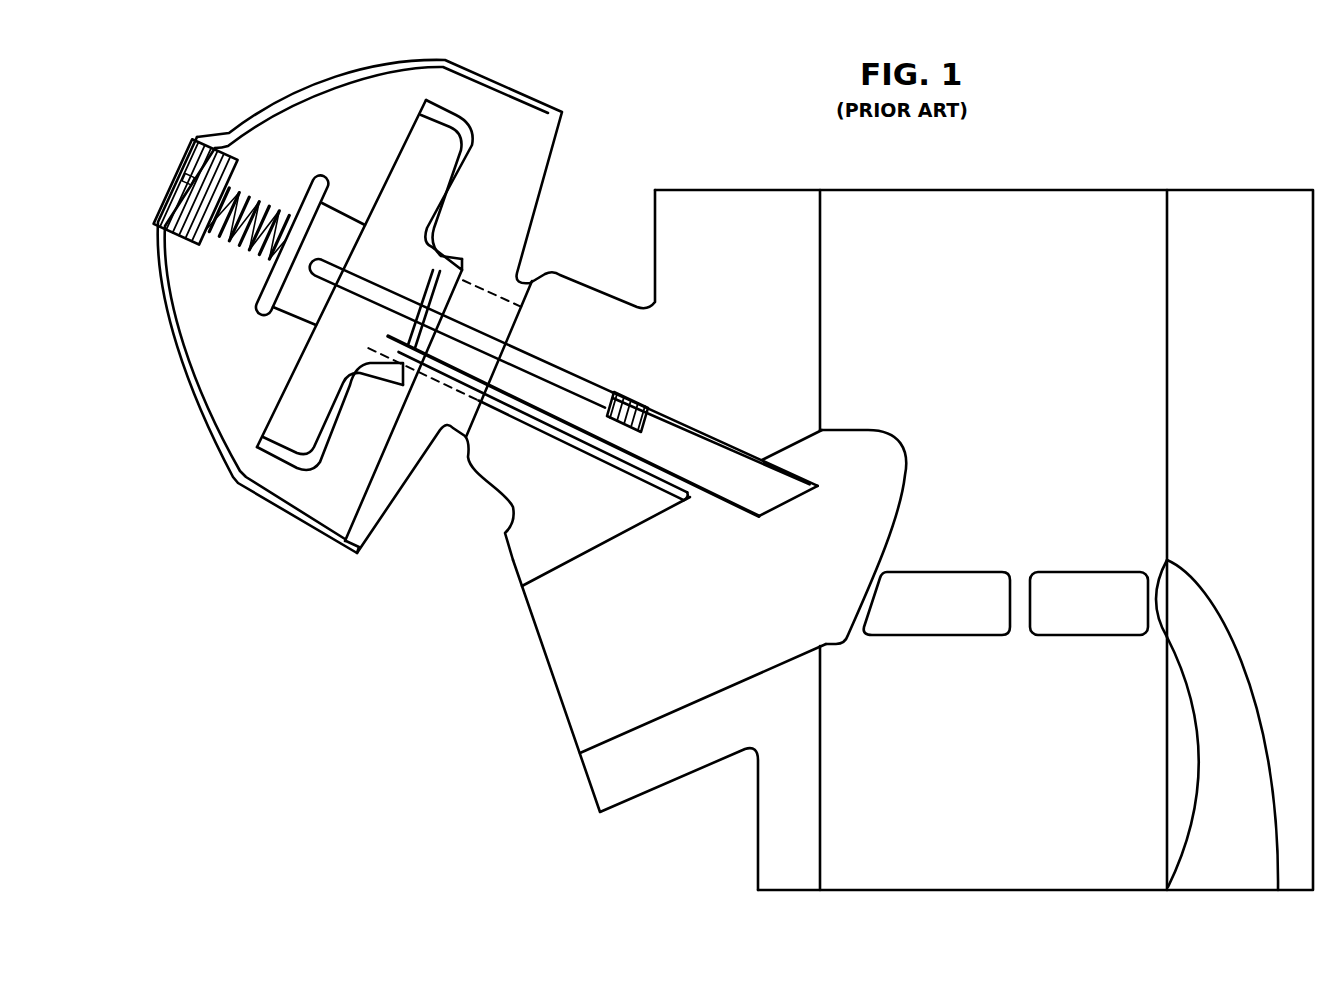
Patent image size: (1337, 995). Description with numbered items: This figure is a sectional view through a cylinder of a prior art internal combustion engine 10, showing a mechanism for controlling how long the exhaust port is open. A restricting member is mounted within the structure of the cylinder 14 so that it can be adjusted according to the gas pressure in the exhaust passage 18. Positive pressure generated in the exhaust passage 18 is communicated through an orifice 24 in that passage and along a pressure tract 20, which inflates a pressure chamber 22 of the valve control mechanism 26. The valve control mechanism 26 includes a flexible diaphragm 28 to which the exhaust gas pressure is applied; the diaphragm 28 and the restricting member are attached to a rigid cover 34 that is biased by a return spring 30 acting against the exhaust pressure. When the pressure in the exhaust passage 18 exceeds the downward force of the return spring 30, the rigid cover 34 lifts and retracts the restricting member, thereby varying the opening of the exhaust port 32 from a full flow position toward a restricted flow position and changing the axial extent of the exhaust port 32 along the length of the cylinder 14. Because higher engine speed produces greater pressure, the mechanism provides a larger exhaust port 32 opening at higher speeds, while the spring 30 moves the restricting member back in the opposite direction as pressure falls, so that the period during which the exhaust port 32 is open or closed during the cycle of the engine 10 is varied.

The internal combustion engine 10 is at (268, 777).
The cylinder 14 is at (1250, 205).
The exhaust passage 18 is at (585, 657).
The pressure tract 20 is at (560, 442).
The pressure chamber 22 is at (448, 150).
The orifice 24 is at (685, 503).
The valve control mechanism 26 is at (152, 383).
The flexible diaphragm 28 is at (312, 462).
The return spring 30 is at (222, 242).
The exhaust port 32 is at (862, 450).
The rigid cover 34 is at (272, 408).